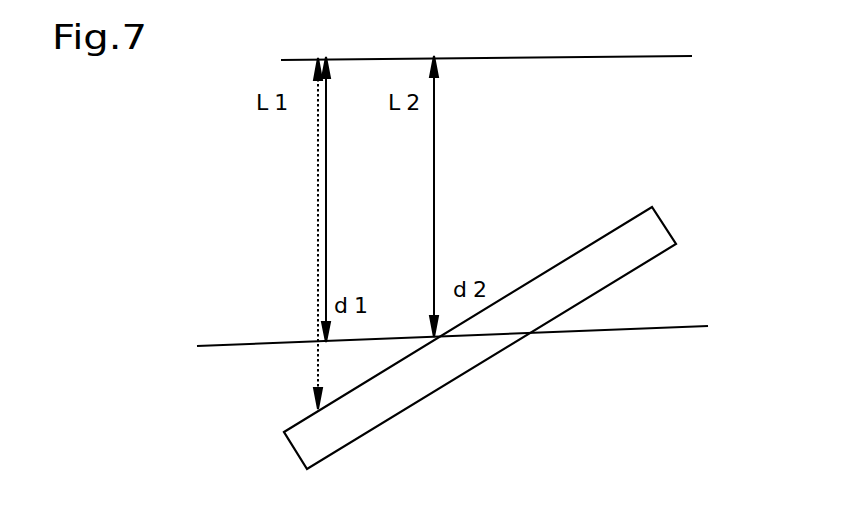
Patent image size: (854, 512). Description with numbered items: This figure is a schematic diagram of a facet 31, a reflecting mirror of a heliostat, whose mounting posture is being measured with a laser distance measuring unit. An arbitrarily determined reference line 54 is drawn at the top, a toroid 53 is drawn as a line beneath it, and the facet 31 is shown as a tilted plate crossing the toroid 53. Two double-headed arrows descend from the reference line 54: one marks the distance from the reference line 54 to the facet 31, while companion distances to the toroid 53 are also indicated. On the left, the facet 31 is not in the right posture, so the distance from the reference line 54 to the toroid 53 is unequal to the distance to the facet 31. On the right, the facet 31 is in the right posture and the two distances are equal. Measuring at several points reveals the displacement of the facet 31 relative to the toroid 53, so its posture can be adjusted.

The reference line 54 is at (637, 57).
The toroid 53 is at (682, 325).
The facet 31 is at (463, 358).